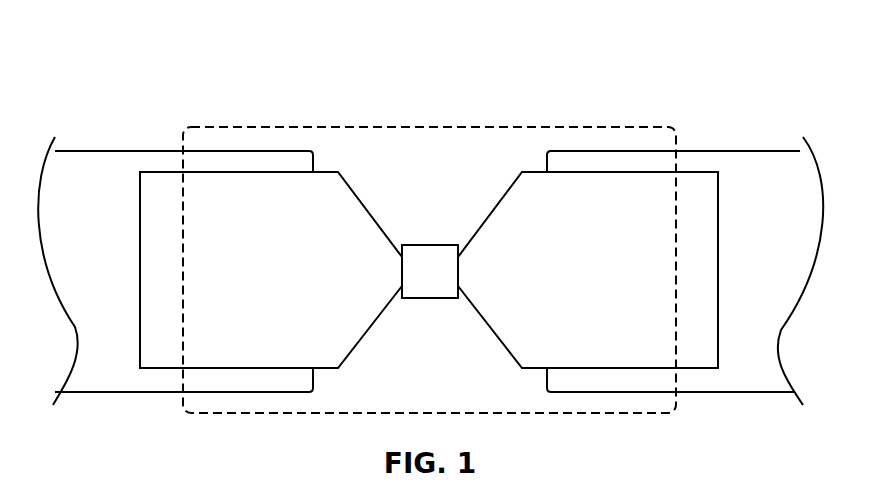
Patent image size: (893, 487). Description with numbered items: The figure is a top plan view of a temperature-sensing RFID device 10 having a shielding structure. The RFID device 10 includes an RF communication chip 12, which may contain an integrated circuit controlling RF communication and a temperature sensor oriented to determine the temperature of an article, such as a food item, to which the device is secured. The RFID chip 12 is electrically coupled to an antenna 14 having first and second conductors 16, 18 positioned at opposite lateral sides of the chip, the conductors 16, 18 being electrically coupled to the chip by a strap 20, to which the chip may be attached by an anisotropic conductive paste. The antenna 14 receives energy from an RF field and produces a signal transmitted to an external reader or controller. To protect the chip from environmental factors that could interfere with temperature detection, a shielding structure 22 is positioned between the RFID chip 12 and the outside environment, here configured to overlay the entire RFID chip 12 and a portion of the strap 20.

The RFID device 10 is at (227, 58).
The RF communication chip 12 is at (426, 245).
The antenna 14 is at (753, 405).
The first conductor 16 is at (77, 188).
The second conductor 18 is at (777, 187).
The strap 20 is at (163, 292).
The shielding structure 22 is at (324, 127).